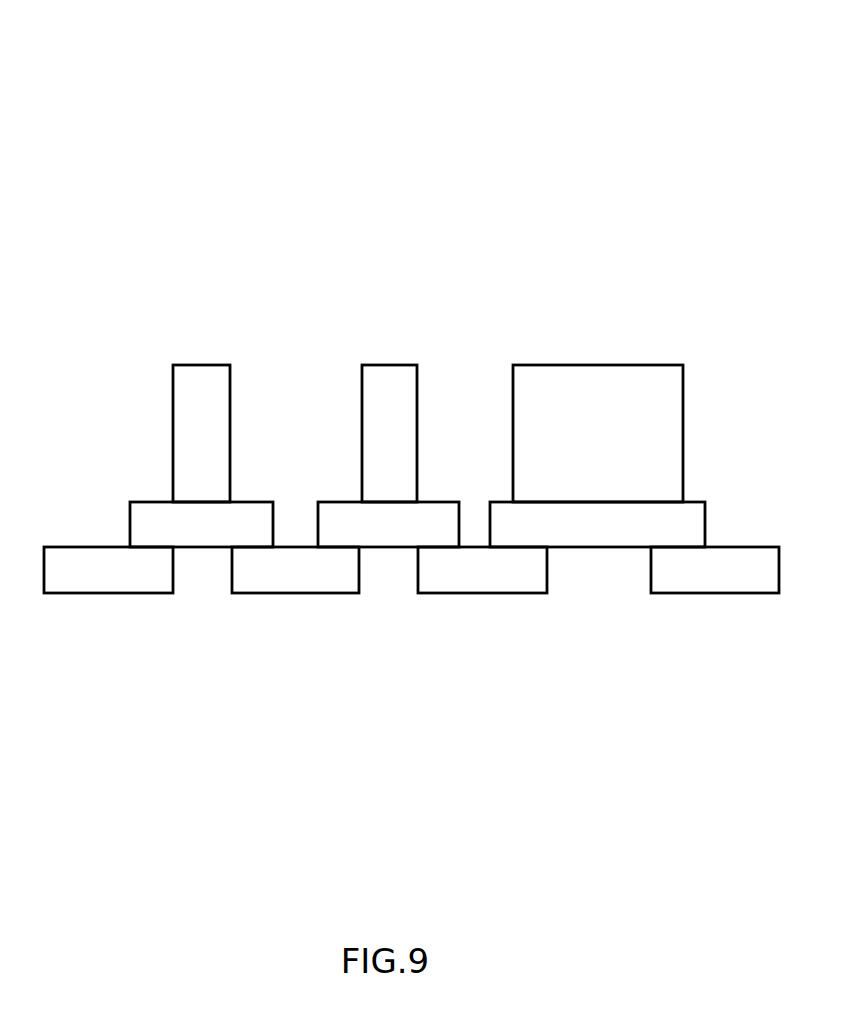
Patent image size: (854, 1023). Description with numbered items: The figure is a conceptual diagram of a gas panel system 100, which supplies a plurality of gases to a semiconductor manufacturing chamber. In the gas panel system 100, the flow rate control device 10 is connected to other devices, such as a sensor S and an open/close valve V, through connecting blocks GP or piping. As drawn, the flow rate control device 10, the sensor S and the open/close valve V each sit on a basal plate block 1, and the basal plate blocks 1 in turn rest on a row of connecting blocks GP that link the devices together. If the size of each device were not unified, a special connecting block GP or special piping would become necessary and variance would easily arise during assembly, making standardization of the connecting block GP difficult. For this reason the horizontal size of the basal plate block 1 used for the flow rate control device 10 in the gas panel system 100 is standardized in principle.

The gas panel system 100 is at (183, 138).
The flow rate control device 10 is at (599, 342).
The basal plate block 1 is at (250, 500).
The sensor S is at (200, 365).
The open/close valve V is at (387, 365).
The connecting block GP is at (108, 593).